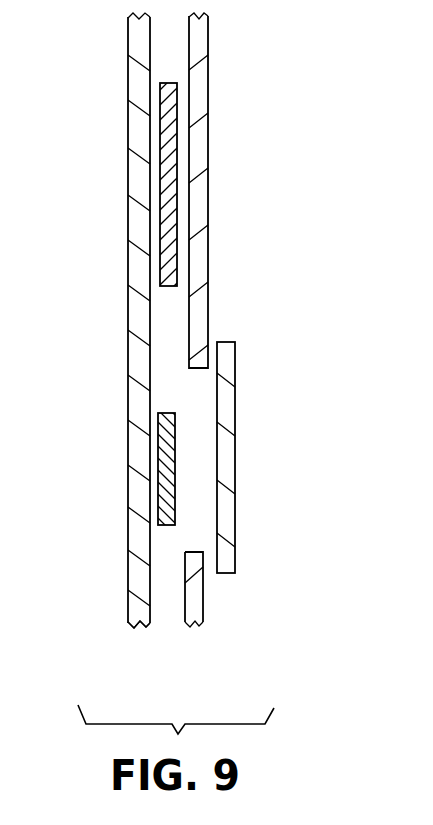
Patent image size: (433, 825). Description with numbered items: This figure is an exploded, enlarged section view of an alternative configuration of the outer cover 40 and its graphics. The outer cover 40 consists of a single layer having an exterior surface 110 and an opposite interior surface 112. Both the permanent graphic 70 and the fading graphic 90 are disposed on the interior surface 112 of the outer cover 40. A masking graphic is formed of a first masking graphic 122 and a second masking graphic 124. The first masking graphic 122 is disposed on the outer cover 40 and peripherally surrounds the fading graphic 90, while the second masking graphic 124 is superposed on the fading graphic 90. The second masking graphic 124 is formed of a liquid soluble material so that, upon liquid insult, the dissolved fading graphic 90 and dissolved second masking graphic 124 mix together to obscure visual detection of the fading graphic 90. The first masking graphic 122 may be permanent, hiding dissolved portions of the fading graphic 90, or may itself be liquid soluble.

The outer cover 40 is at (122, 87).
The permanent graphic 70 is at (178, 164).
The fading graphic 90 is at (176, 425).
The exterior surface 110 is at (127, 563).
The interior surface 112 is at (150, 607).
The first masking graphic 122 is at (208, 74).
The second masking graphic 124 is at (235, 519).